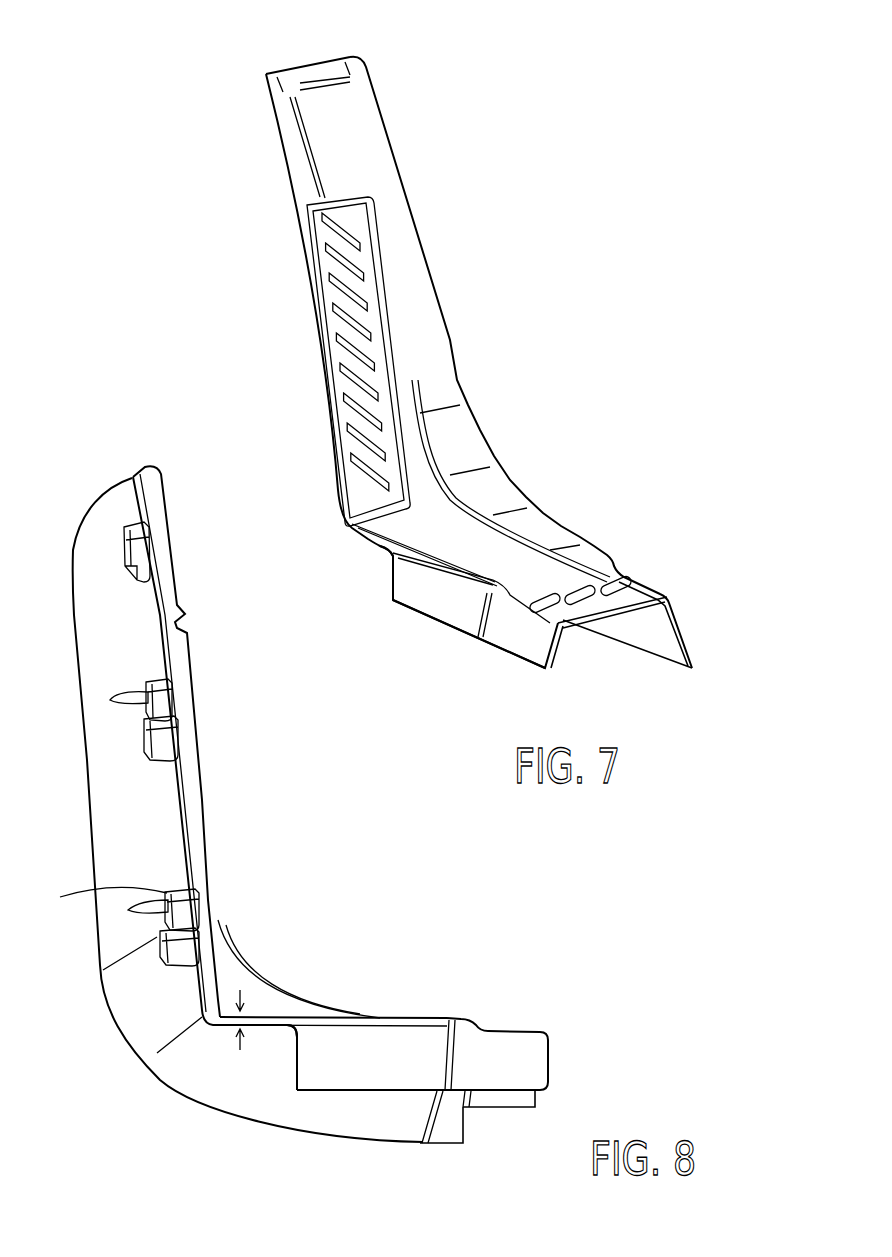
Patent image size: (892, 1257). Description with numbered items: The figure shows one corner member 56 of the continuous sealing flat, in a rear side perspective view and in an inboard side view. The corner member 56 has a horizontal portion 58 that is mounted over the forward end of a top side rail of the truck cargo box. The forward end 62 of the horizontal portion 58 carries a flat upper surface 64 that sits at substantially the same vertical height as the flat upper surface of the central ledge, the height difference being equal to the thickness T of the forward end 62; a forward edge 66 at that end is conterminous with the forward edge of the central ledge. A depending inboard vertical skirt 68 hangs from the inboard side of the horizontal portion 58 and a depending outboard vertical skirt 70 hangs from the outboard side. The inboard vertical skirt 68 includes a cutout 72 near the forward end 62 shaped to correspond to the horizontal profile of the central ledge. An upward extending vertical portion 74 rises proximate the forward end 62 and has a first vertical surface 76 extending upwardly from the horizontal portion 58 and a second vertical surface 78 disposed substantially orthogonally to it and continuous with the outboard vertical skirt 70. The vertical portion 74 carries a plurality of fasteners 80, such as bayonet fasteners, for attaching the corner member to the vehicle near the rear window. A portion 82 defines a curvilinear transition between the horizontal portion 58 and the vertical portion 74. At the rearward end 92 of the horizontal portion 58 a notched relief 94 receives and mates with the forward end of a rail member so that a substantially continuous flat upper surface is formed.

In FIG. 7, the corner member 56 is at (452, 378).
In FIG. 8, the corner member 56 is at (127, 1000).
In FIG. 7, the horizontal portion 58 is at (440, 540).
In FIG. 8, the horizontal portion 58 is at (420, 1022).
In FIG. 8, the forward end 62 is at (264, 1025).
In FIG. 8, the flat upper surface 64 is at (300, 1012).
In FIG. 8, the forward edge 66 is at (208, 1028).
In FIG. 7, the inboard vertical skirt 68 is at (505, 635).
In FIG. 8, the inboard vertical skirt 68 is at (535, 1060).
In FIG. 7, the outboard vertical skirt 70 is at (668, 637).
In FIG. 8, the outboard vertical skirt 70 is at (447, 1125).
In FIG. 7, the cutout 72 is at (377, 545).
In FIG. 8, the cutout 72 is at (287, 1032).
In FIG. 7, the vertical portion 74 is at (382, 165).
In FIG. 8, the vertical portion 74 is at (200, 780).
In FIG. 7, the first vertical surface 76 is at (425, 268).
In FIG. 7, the second vertical surface 78 is at (382, 103).
In FIG. 8, the fasteners 80 is at (132, 727).
In FIG. 7, the curvilinear transition portion 82 is at (467, 458).
In FIG. 8, the curvilinear transition portion 82 is at (263, 965).
In FIG. 7, the rearward end 92 is at (598, 603).
In FIG. 8, the rearward end 92 is at (488, 1075).
In FIG. 7, the notched relief 94 is at (622, 575).
In FIG. 8, the notched relief 94 is at (490, 1030).